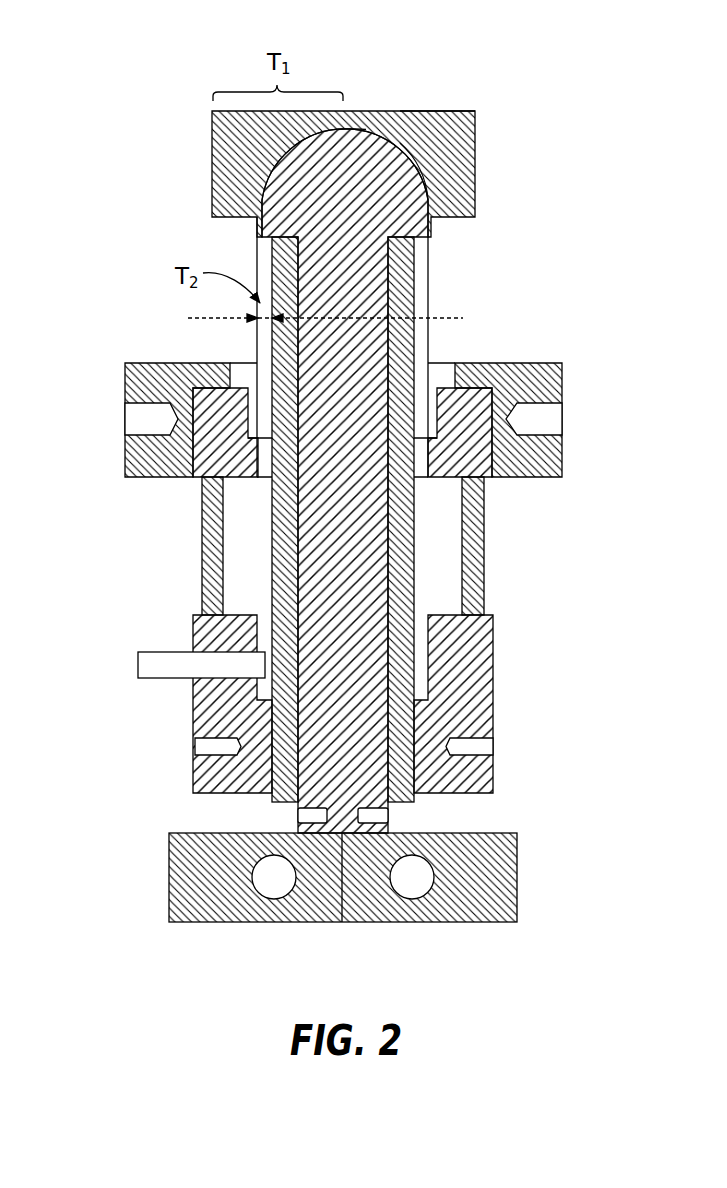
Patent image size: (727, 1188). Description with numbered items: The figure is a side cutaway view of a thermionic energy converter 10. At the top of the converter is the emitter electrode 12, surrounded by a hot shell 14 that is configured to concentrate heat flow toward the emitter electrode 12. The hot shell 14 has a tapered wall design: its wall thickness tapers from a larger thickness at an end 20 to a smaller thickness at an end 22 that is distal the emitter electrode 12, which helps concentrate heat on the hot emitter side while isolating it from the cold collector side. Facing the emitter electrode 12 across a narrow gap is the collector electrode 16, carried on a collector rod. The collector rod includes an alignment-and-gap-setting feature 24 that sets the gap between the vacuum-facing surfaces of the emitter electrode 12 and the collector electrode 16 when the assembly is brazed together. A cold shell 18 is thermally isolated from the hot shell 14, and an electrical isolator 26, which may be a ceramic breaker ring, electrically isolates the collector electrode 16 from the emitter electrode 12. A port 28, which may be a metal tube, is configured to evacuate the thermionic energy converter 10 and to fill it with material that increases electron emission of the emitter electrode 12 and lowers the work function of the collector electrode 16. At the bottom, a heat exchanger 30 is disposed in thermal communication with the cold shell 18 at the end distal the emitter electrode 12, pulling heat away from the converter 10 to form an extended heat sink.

The thermionic energy converter 10 is at (352, 47).
The emitter electrode 12 is at (415, 153).
The hot shell 14 is at (434, 97).
The collector electrode 16 is at (356, 220).
The cold shell 18 is at (416, 552).
The end 20 is at (208, 107).
The end 22 is at (125, 348).
The alignment-and-gap-setting feature 24 is at (352, 128).
The electrical isolator 26 is at (202, 543).
The port 28 is at (153, 666).
The heat exchanger 30 is at (240, 878).